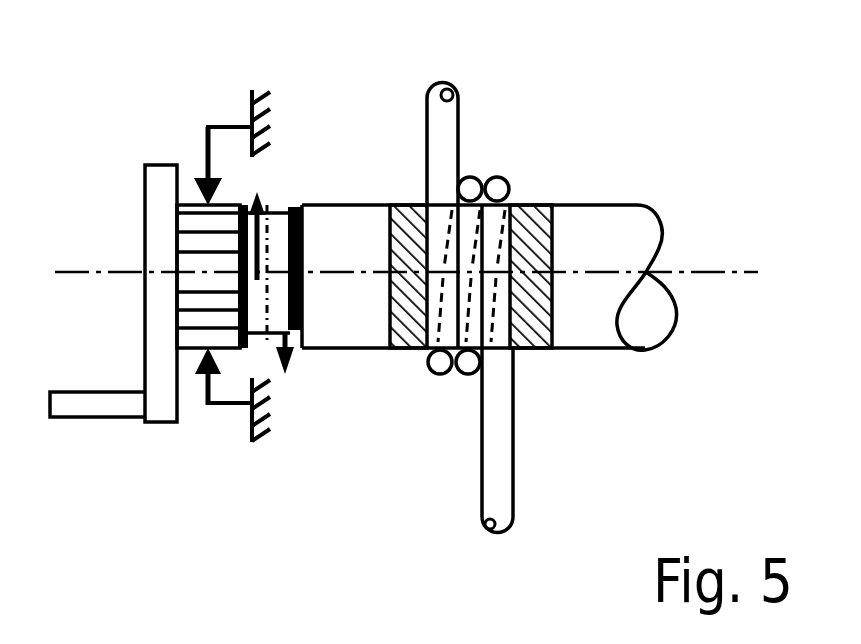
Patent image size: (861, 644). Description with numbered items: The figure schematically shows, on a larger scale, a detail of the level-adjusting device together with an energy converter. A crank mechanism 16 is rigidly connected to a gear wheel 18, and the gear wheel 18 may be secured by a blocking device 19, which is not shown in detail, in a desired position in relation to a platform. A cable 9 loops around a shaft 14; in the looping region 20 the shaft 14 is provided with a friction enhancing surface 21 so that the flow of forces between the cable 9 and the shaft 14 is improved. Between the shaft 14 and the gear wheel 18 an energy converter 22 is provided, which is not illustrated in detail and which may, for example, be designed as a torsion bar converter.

The cable 9 is at (460, 118).
The shaft 14 is at (603, 233).
The crank mechanism 16 is at (128, 420).
The gear wheel 18 is at (205, 300).
The blocking device 19 is at (211, 118).
The looping region 20 is at (456, 385).
The friction enhancing surface 21 is at (528, 352).
The energy converter 22 is at (285, 210).